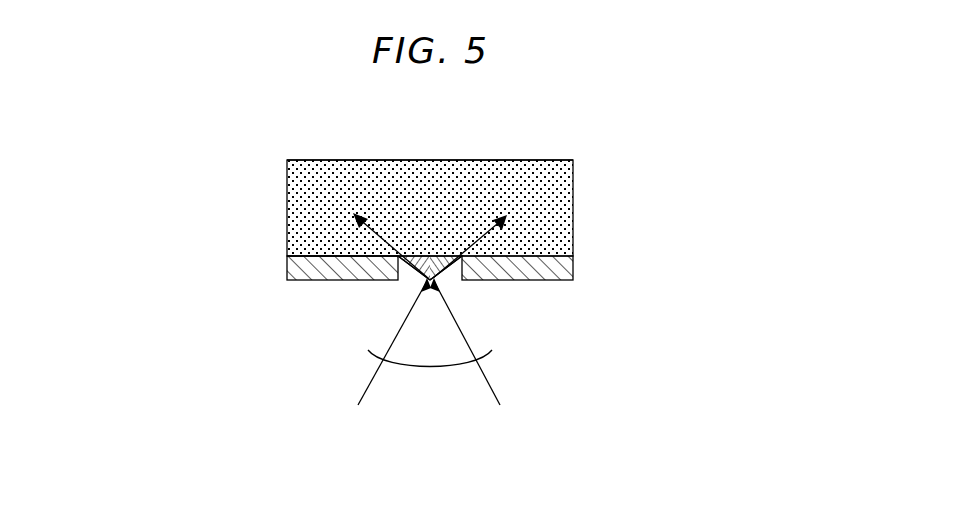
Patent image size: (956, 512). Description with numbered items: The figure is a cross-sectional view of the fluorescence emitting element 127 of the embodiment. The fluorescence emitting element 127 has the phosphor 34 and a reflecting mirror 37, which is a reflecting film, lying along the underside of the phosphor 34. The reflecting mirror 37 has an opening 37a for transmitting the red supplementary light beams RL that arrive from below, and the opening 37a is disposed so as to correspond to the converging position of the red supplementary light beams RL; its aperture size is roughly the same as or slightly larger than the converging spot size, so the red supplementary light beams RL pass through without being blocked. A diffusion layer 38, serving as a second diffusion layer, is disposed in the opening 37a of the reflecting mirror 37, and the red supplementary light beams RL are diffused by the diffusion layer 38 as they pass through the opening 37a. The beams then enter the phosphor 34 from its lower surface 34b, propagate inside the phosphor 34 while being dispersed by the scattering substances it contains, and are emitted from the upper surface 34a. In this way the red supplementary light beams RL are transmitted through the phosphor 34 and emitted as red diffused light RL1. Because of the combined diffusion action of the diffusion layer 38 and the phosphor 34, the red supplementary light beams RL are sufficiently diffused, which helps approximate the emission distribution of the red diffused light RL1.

The fluorescence emitting element 127 is at (588, 158).
The phosphor 34 is at (447, 190).
The upper surface 34a is at (318, 159).
The lower surface 34b is at (297, 272).
The reflecting mirror 37 is at (553, 282).
The opening 37a is at (453, 282).
The diffusion layer 38 is at (408, 282).
The red supplementary light beams RL is at (430, 366).
The red diffused light RL1 is at (368, 236).